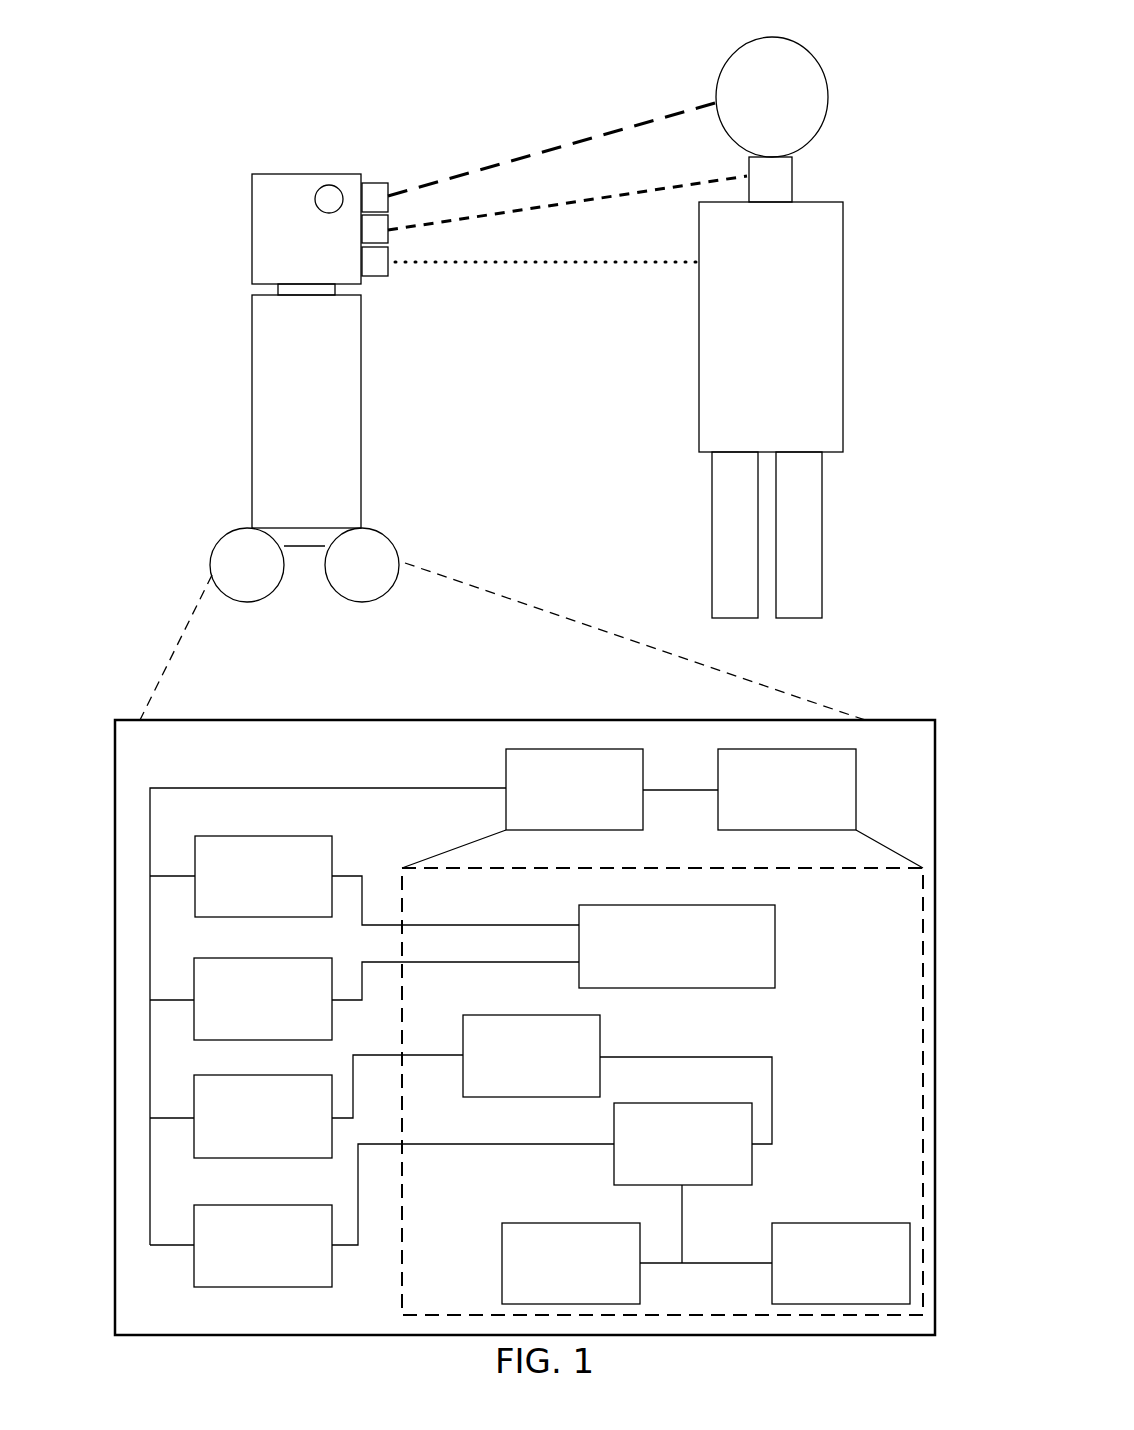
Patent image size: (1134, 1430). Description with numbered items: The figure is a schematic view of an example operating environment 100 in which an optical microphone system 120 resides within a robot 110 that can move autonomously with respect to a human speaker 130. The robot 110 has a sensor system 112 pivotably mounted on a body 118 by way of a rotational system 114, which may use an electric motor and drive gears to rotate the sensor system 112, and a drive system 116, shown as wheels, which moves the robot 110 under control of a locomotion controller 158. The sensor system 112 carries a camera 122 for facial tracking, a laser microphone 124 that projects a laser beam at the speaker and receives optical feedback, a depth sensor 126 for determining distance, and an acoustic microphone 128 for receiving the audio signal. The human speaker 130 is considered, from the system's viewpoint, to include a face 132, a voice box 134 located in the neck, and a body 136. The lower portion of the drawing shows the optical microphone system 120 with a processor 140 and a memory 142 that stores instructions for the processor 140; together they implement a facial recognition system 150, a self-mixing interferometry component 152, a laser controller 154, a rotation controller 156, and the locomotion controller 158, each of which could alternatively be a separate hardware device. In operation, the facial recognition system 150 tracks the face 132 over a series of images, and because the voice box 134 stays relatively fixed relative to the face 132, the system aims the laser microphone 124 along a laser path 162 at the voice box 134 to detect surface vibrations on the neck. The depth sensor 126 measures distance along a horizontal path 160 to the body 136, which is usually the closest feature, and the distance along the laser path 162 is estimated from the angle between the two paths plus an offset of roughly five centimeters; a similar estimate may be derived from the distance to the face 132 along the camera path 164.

The operating environment 100 is at (230, 36).
The robot 110 is at (205, 103).
The sensor system 112 is at (252, 188).
The rotational system 114 is at (278, 290).
The drive system 116 is at (233, 531).
The body 118 is at (254, 374).
The optical microphone system 120 is at (385, 720).
The camera 122 is at (378, 188).
The laser microphone 124 is at (365, 235).
The depth sensor 126 is at (373, 277).
The acoustic microphone 128 is at (328, 189).
The human speaker 130 is at (856, 34).
The face 132 is at (722, 70).
The voice box 134 is at (773, 183).
The body 136 is at (845, 290).
The processor 140 is at (578, 750).
The memory 142 is at (788, 750).
The facial recognition system 150 is at (712, 1103).
The self-mixing interferometry component 152 is at (675, 905).
The laser controller 154 is at (562, 1015).
The rotation controller 156 is at (503, 1265).
The locomotion controller 158 is at (882, 1223).
The horizontal path 160 is at (560, 265).
The laser path 162 is at (568, 205).
The camera path 164 is at (562, 150).